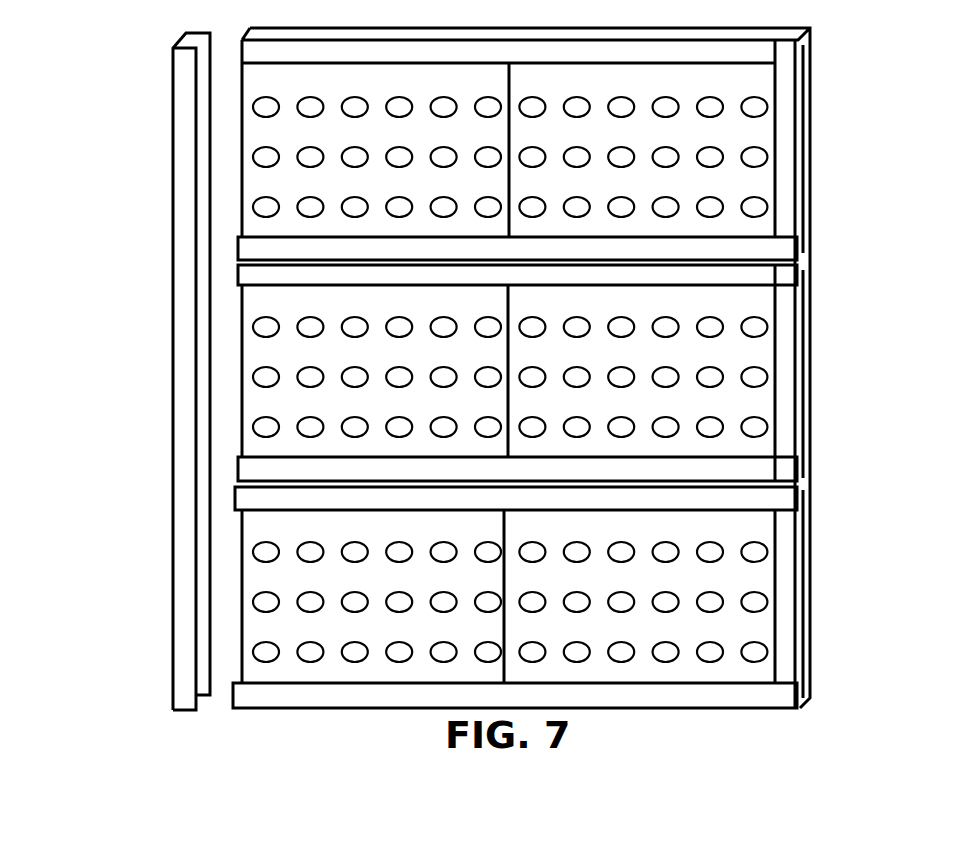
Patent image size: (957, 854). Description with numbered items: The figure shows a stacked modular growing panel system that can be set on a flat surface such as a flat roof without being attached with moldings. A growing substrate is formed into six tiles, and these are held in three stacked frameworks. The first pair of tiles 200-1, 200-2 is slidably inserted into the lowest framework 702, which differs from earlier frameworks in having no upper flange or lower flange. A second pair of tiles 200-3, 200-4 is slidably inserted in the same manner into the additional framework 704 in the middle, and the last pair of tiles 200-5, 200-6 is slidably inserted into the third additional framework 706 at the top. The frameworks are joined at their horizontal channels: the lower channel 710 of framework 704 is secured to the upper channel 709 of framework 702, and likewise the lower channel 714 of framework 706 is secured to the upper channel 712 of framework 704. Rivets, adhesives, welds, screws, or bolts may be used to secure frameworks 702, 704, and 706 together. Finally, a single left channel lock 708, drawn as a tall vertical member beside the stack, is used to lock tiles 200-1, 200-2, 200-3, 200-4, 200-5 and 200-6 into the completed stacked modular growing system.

The framework 702 is at (575, 590).
The additional framework 704 is at (577, 368).
The third additional framework 706 is at (578, 147).
The left channel lock 708 is at (173, 382).
The upper channel 709 is at (516, 499).
The lower channel 710 is at (517, 469).
The upper channel 712 is at (517, 275).
The lower channel 714 is at (517, 248).
The tile 200-1 is at (300, 540).
The tile 200-2 is at (565, 540).
The tile 200-3 is at (300, 315).
The tile 200-4 is at (570, 315).
The tile 200-5 is at (300, 95).
The tile 200-6 is at (572, 95).